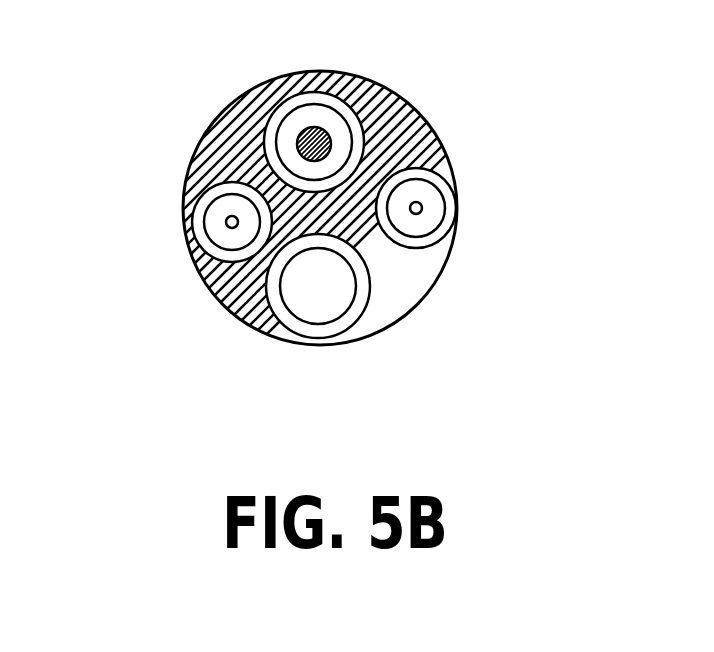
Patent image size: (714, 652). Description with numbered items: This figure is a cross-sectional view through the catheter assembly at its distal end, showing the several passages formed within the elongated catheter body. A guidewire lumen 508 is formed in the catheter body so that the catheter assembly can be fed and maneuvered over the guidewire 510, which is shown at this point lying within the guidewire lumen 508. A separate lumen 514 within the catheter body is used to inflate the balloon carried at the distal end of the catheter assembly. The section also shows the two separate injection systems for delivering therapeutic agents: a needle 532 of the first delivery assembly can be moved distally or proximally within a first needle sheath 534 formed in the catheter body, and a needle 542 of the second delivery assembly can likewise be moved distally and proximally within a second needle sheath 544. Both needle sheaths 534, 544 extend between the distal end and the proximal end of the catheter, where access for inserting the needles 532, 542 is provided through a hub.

The guidewire lumen 508 is at (338, 82).
The guidewire 510 is at (297, 141).
The lumen 514 is at (327, 300).
The needle 532 is at (422, 208).
The first needle sheath 534 is at (428, 170).
The needle 542 is at (226, 222).
The second needle sheath 544 is at (187, 243).